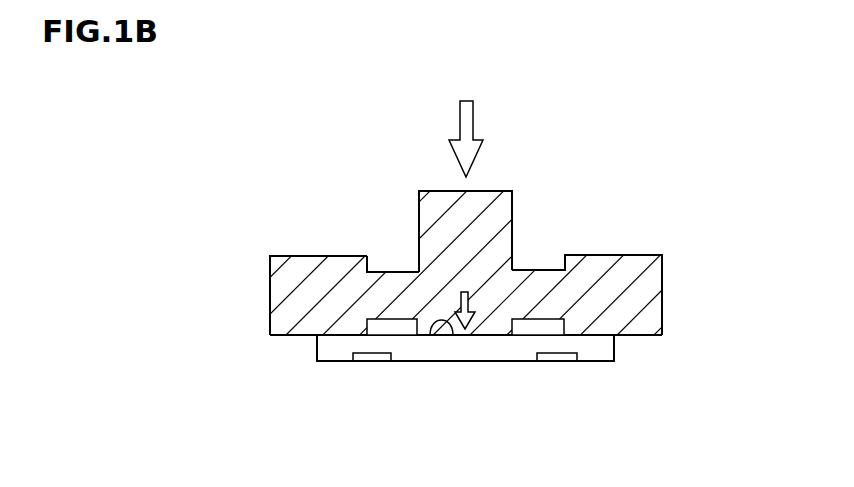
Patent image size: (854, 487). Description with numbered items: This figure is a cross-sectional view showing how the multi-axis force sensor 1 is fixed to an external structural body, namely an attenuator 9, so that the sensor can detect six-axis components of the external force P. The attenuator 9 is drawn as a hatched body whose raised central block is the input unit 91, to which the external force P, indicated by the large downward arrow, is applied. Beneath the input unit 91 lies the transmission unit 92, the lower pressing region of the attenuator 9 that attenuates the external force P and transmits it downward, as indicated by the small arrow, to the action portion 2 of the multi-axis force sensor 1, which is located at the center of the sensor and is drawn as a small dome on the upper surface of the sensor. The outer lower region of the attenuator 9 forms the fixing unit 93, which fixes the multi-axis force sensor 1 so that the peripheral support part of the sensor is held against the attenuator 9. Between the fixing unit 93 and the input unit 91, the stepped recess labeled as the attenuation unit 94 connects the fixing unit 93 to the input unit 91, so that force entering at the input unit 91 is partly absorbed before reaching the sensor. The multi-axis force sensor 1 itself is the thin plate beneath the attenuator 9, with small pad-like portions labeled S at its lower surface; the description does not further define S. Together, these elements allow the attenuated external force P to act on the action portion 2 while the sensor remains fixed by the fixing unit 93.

The multi-axis force sensor 1 is at (593, 362).
The action portion 2 is at (432, 337).
The attenuator 9 is at (638, 243).
The input unit 91 is at (490, 191).
The transmission unit 92 is at (486, 337).
The fixing unit 93 is at (295, 337).
The attenuation unit 94 is at (388, 270).
The terminal electrode S is at (558, 357).
The external force P is at (466, 121).